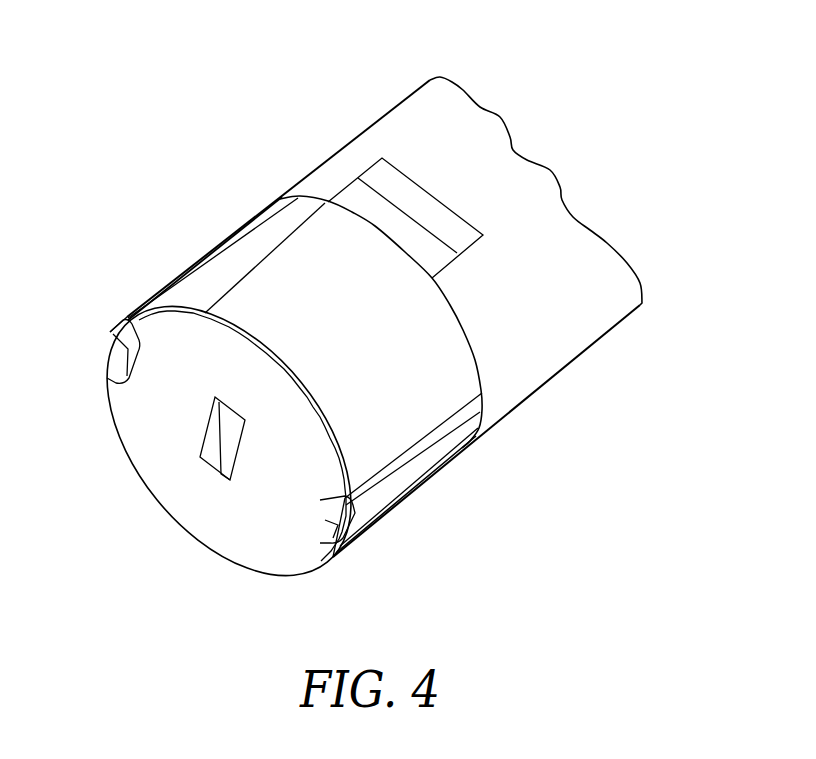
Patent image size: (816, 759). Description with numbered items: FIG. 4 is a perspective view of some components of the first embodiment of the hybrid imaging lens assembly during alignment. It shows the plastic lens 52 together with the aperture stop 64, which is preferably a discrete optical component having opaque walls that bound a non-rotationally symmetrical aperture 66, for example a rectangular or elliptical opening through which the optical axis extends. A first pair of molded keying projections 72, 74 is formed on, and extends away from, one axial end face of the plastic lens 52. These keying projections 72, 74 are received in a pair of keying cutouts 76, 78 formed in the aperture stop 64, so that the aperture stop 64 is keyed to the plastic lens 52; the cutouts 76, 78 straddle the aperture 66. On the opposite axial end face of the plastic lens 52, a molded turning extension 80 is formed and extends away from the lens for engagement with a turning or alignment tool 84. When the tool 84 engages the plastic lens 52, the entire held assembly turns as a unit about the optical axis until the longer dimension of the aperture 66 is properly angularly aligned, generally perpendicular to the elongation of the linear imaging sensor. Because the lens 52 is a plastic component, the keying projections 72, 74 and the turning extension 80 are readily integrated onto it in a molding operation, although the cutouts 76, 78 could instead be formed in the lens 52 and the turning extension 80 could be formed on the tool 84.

The plastic lens 52 is at (240, 252).
The aperture stop 64 is at (270, 576).
The non-rotationally symmetrical aperture 66 is at (228, 481).
The keying projection 72 is at (327, 520).
The keying projection 74 is at (115, 361).
The keying cutout 76 is at (362, 492).
The keying cutout 78 is at (128, 322).
The turning extension 80 is at (442, 233).
The turning tool 84 is at (630, 286).